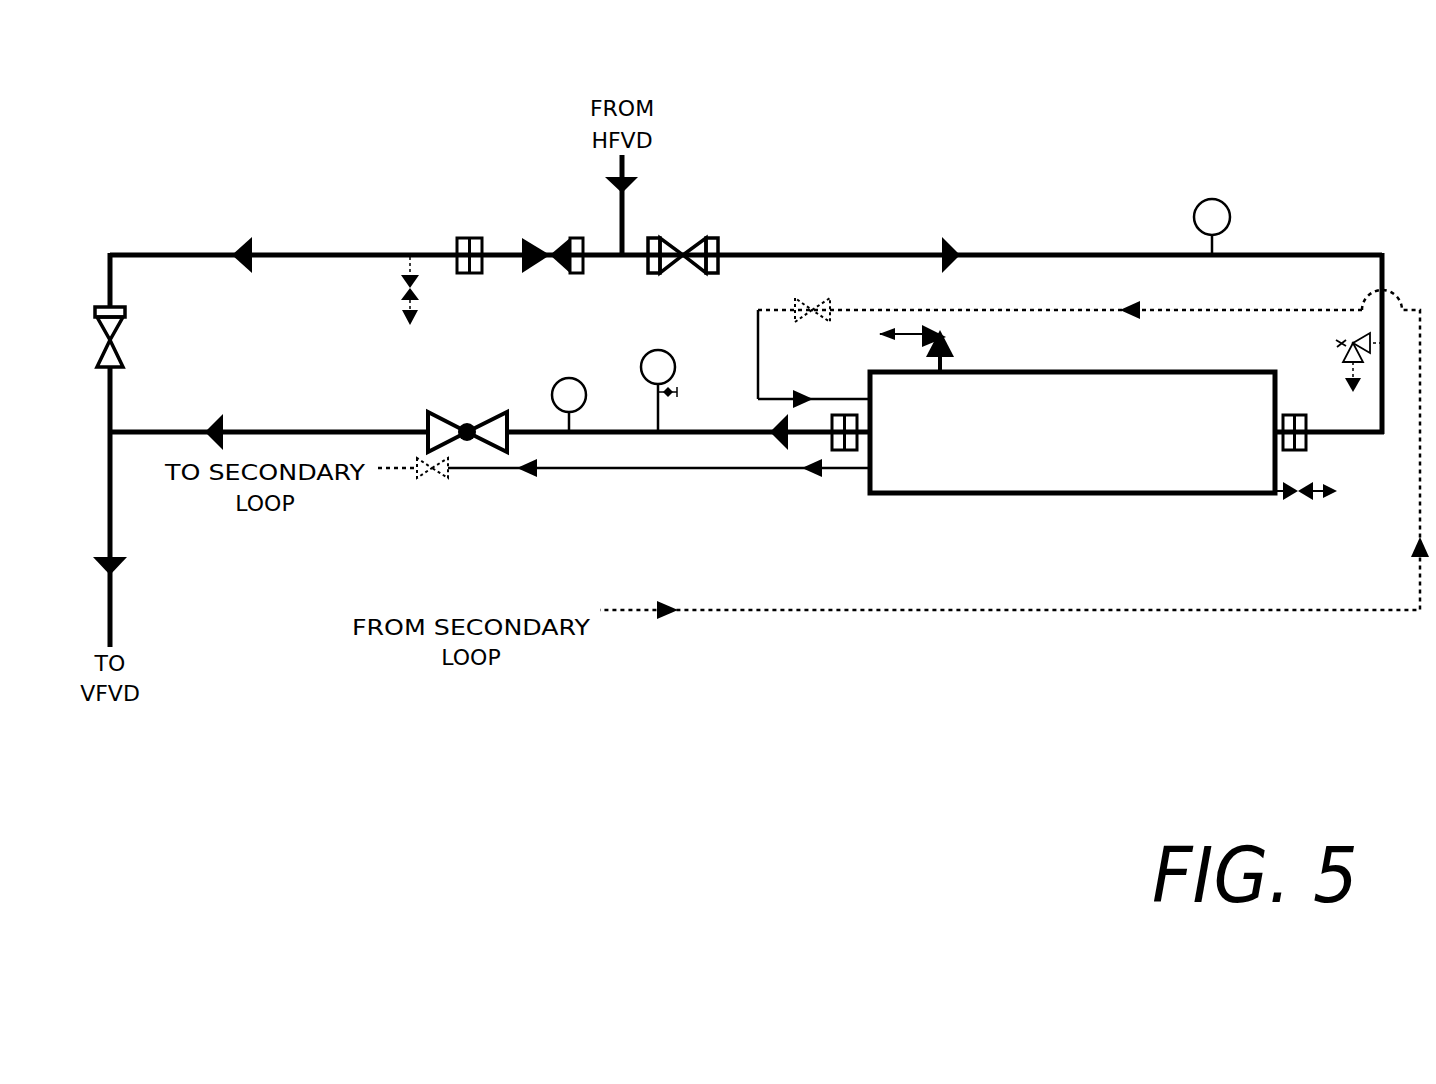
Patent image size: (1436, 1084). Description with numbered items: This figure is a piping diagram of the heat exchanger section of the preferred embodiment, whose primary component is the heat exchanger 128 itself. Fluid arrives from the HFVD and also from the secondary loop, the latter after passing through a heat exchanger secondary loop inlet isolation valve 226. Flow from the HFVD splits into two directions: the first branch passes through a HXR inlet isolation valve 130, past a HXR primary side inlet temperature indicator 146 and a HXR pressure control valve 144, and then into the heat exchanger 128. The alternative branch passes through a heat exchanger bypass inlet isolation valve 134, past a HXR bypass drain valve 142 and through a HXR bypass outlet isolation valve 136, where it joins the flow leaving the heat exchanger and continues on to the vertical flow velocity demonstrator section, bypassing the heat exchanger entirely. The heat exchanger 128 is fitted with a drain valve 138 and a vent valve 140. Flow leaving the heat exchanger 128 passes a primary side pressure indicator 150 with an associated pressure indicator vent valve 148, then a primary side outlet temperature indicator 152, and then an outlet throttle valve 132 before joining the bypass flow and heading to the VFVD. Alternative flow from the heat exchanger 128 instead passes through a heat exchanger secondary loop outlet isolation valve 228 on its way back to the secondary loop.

The heat exchanger 128 is at (1060, 507).
The HXR inlet isolation valve 130 is at (685, 242).
The outlet throttle valve 132 is at (430, 405).
The heat exchanger bypass inlet isolation valve 134 is at (535, 233).
The HXR bypass outlet isolation valve 136 is at (133, 347).
The drain valve 138 is at (1265, 507).
The vent valve 140 is at (957, 347).
The HXR bypass drain valve 142 is at (397, 293).
The HXR pressure control valve 144 is at (1330, 352).
The HXR primary side inlet temperature indicator 146 is at (1240, 215).
The pressure indicator vent valve 148 is at (687, 393).
The primary side pressure indicator 150 is at (670, 345).
The primary side outlet temperature indicator 152 is at (563, 373).
The heat exchanger secondary loop inlet isolation valve 226 is at (808, 300).
The heat exchanger secondary loop outlet isolation valve 228 is at (438, 490).